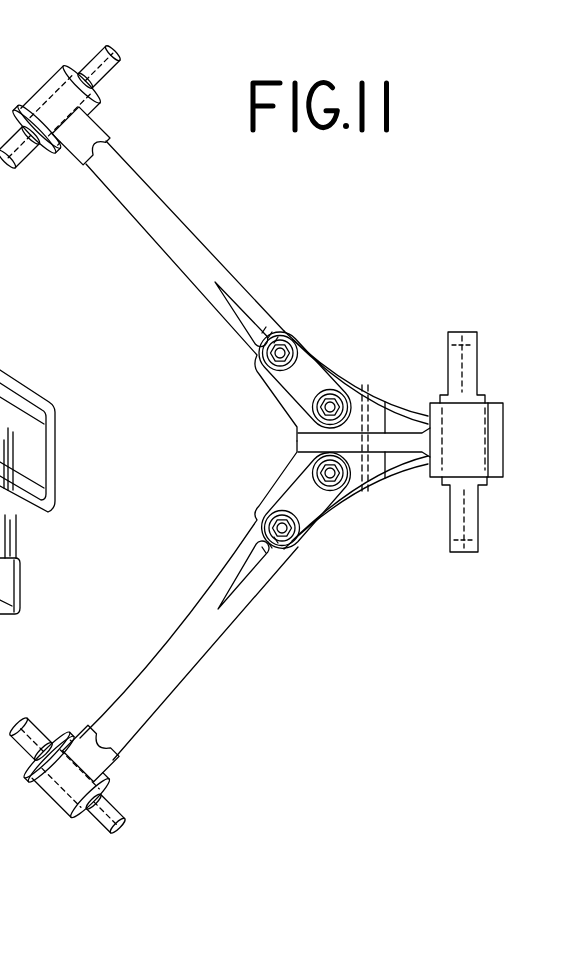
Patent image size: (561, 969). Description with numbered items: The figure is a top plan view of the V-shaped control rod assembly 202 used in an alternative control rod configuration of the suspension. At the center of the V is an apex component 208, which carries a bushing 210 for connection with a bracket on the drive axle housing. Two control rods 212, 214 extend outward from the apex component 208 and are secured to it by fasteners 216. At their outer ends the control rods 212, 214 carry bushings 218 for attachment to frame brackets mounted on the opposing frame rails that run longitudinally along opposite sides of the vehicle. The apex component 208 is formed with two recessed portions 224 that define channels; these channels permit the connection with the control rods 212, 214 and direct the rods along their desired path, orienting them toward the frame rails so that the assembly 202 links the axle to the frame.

The V-shaped control rod assembly 202 is at (442, 292).
The apex component 208 is at (384, 486).
The bushing 210 is at (485, 400).
The control rod 212 is at (182, 247).
The control rod 214 is at (165, 683).
The fasteners 216 is at (280, 347).
The bushings 218 is at (97, 111).
The recessed portions 224 is at (378, 397).